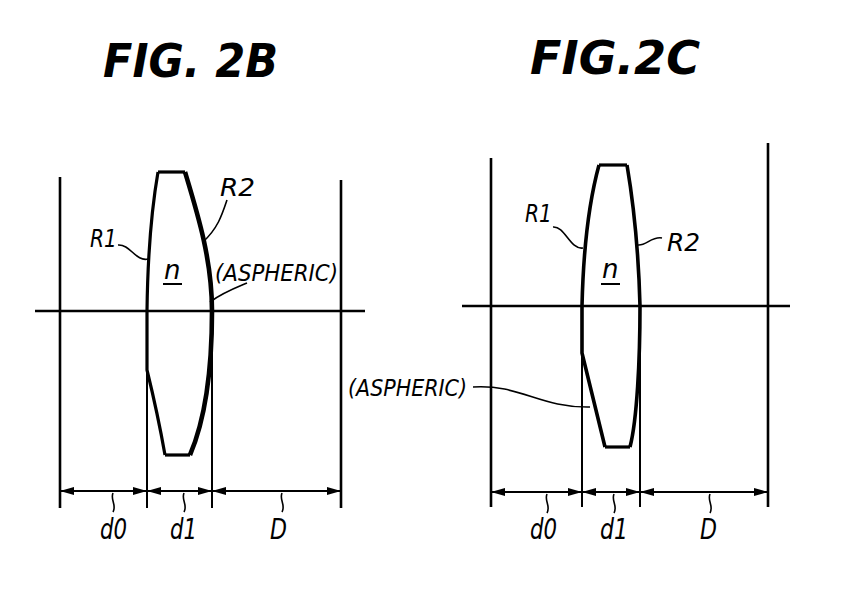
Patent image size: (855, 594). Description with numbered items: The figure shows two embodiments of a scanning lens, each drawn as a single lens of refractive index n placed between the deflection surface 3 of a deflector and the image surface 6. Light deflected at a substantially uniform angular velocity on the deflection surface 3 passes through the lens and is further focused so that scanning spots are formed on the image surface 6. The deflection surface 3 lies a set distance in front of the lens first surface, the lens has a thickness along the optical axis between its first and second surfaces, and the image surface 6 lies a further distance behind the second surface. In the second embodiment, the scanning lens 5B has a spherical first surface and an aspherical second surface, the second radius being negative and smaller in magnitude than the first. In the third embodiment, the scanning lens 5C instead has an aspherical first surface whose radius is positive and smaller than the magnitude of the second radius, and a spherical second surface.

In FIG. 2B, the deflection surface 3 is at (60, 218).
In FIG. 2C, the deflection surface 3 is at (491, 220).
In FIG. 2B, the image surface 6 is at (341, 242).
In FIG. 2C, the image surface 6 is at (768, 228).
In FIG. 2B, the scanning lens 5B is at (178, 172).
In FIG. 2C, the scanning lens 5C is at (613, 165).